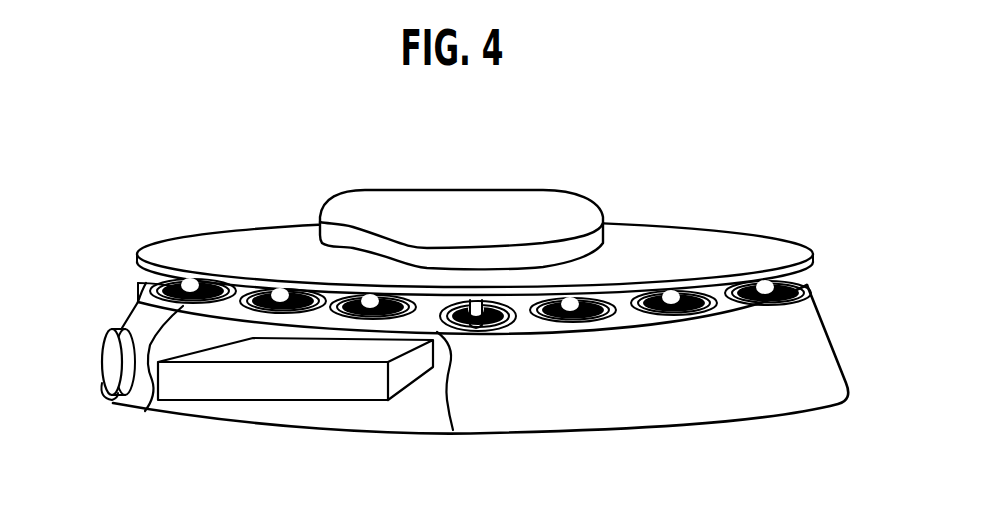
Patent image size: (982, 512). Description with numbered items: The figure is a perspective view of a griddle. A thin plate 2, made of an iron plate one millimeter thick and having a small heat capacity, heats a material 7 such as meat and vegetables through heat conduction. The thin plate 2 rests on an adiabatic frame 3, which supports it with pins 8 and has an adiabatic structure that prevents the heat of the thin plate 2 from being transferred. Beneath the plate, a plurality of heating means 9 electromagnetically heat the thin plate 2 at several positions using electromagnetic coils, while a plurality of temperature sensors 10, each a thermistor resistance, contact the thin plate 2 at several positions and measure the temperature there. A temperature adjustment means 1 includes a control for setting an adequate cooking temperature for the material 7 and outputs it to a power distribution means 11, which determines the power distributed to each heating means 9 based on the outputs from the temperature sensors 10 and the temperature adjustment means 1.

The temperature adjustment means 1 is at (112, 400).
The thin plate 2 is at (687, 237).
The adiabatic frame 3 is at (663, 407).
The material 7 is at (548, 207).
The pins 8 is at (473, 307).
The heating means 9 is at (146, 290).
The temperature sensors 10 is at (138, 302).
The power distribution means 11 is at (295, 382).